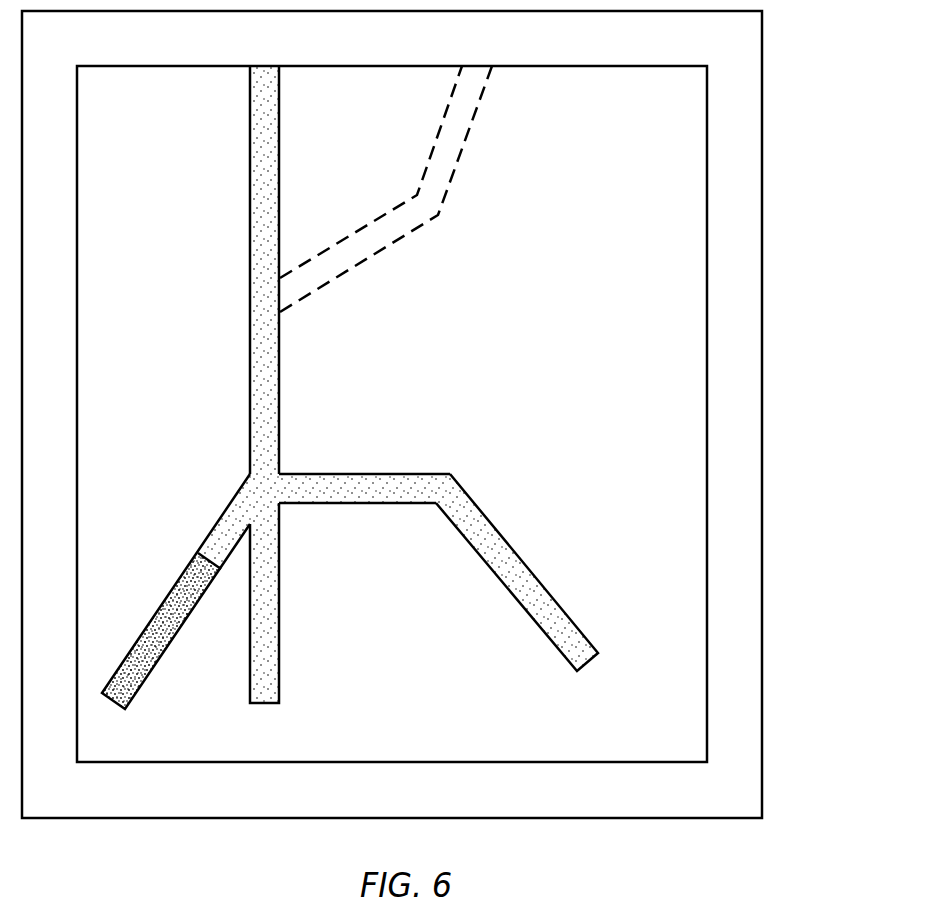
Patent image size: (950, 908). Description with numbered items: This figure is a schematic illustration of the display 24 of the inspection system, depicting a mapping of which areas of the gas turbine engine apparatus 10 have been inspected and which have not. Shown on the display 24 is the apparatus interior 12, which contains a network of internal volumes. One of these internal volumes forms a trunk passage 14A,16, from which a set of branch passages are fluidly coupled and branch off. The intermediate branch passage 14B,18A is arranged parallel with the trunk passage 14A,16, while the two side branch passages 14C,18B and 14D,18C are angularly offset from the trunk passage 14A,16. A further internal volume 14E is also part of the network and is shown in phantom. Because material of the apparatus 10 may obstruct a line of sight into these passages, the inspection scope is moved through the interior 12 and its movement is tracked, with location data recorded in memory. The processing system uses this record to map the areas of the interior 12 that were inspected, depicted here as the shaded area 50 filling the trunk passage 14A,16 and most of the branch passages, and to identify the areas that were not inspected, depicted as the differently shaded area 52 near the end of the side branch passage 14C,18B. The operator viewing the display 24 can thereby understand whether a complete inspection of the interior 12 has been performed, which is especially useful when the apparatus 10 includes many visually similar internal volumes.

The gas turbine engine apparatus 10 is at (698, 173).
The display 24 is at (765, 257).
The interior 12 is at (248, 453).
The internal volume / trunk passage 14A,16 is at (259, 243).
The internal volume / intermediate branch passage 14B,18A is at (272, 667).
The internal volume / side branch passage 14C,18B is at (172, 635).
The internal volume / side branch passage 14D,18C is at (520, 570).
The internal volume 14E is at (465, 113).
The shaded area 50 is at (270, 390).
The shaded area 52 is at (163, 601).